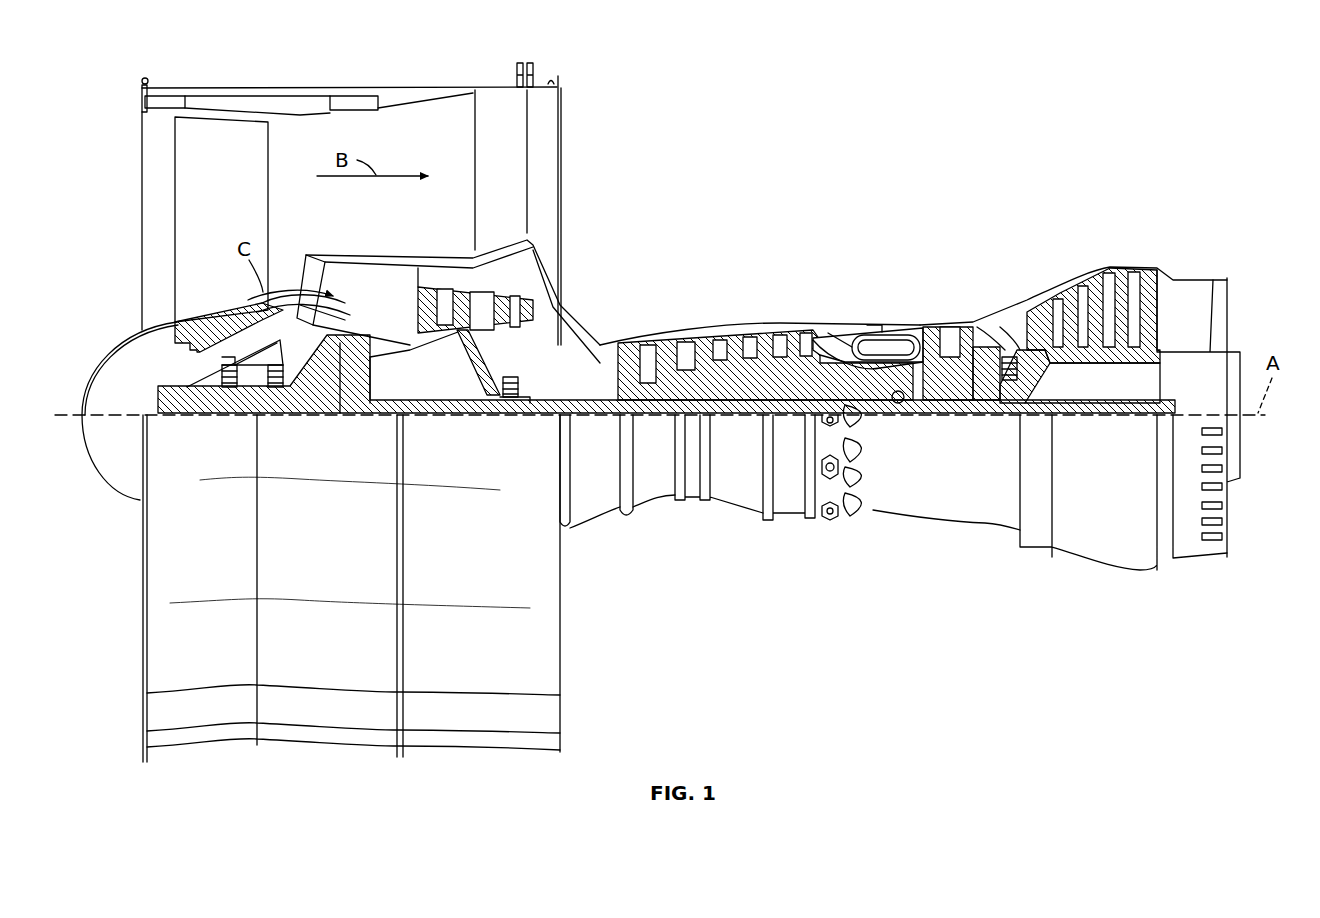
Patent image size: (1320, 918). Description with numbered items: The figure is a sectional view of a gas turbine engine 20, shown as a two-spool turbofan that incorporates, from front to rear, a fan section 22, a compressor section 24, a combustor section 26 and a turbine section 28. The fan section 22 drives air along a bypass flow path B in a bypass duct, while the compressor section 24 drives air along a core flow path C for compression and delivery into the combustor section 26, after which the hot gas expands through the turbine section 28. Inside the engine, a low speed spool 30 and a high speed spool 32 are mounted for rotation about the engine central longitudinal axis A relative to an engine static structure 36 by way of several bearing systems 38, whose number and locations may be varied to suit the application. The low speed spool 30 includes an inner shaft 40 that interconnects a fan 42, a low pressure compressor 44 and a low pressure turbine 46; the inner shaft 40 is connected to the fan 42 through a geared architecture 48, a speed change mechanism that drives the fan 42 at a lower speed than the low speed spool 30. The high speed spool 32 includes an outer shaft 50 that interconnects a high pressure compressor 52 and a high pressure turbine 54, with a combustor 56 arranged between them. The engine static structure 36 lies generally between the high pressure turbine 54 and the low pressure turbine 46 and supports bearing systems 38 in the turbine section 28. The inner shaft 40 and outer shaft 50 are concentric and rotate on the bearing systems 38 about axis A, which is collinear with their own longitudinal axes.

The gas turbine engine 20 is at (1110, 96).
The fan section 22 is at (234, 84).
The compressor section 24 is at (717, 240).
The combustor section 26 is at (890, 226).
The turbine section 28 is at (1028, 220).
The low speed spool 30 is at (756, 420).
The high speed spool 32 is at (800, 378).
The engine static structure 36 is at (792, 522).
The bearing systems 38 is at (230, 378).
The inner shaft 40 is at (577, 417).
The fan 42 is at (233, 218).
The low pressure compressor 44 is at (487, 300).
The low pressure turbine 46 is at (1095, 290).
The geared architecture 48 is at (358, 396).
The outer shaft 50 is at (906, 398).
The high pressure compressor 52 is at (708, 383).
The high pressure turbine 54 is at (947, 322).
The combustor 56 is at (878, 343).